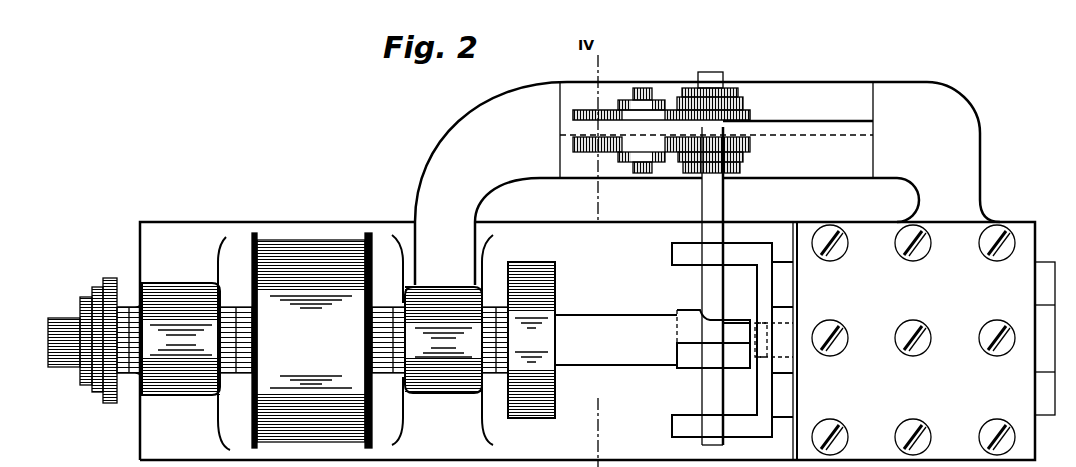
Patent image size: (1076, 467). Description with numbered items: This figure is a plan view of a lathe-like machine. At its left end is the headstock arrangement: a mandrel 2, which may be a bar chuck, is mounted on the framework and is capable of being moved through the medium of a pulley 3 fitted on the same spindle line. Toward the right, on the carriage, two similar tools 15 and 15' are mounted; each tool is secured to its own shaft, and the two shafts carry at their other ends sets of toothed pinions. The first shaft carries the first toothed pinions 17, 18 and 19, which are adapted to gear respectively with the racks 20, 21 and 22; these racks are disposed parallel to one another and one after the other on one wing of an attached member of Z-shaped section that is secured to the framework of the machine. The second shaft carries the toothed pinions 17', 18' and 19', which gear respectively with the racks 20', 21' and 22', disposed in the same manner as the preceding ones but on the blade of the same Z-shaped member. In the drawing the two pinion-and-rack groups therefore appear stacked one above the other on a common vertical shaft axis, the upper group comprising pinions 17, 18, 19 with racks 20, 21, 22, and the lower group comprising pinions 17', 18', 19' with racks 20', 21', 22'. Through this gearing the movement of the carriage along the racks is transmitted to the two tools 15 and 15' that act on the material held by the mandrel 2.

The mandrel 2 is at (530, 385).
The pulley 3 is at (300, 265).
The tool 15 is at (687, 381).
The tool 15' is at (687, 320).
The toothed pinion 17 is at (758, 258).
The toothed pinion 17' is at (729, 188).
The toothed pinion 18 is at (749, 108).
The toothed pinion 18' is at (748, 174).
The toothed pinion 19 is at (750, 79).
The toothed pinion 19' is at (743, 154).
The rack 20 is at (633, 123).
The rack 20' is at (624, 185).
The rack 21 is at (605, 84).
The rack 21' is at (594, 174).
The rack 22 is at (637, 67).
The rack 22' is at (562, 150).